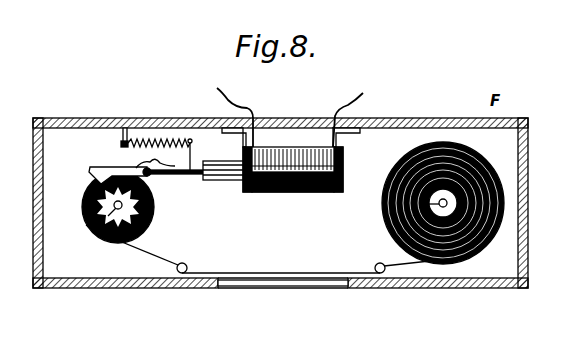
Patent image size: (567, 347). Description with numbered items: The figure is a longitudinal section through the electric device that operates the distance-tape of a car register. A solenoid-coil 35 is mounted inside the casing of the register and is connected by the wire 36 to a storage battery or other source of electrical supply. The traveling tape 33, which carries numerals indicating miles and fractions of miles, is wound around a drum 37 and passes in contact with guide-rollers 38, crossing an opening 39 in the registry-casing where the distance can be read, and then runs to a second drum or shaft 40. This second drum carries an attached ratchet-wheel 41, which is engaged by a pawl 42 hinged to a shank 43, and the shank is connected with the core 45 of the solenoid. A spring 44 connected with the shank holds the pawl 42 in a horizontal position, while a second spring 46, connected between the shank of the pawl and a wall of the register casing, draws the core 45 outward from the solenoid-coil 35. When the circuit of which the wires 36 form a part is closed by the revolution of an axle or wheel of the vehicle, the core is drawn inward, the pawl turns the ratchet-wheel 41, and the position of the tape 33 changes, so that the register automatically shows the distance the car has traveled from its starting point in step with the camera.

The traveling tape 33 is at (345, 276).
The solenoid-coil 35 is at (315, 192).
The wire 36 is at (241, 110).
The drum 37 is at (386, 205).
The guide-rollers 38 is at (182, 263).
The opening 39 is at (278, 286).
The second drum or shaft 40 is at (86, 224).
The ratchet-wheel 41 is at (156, 201).
The pawl 42 is at (103, 172).
The shank 43 is at (193, 171).
The spring 44 is at (151, 159).
The core 45 is at (227, 181).
The spring 46 is at (165, 139).